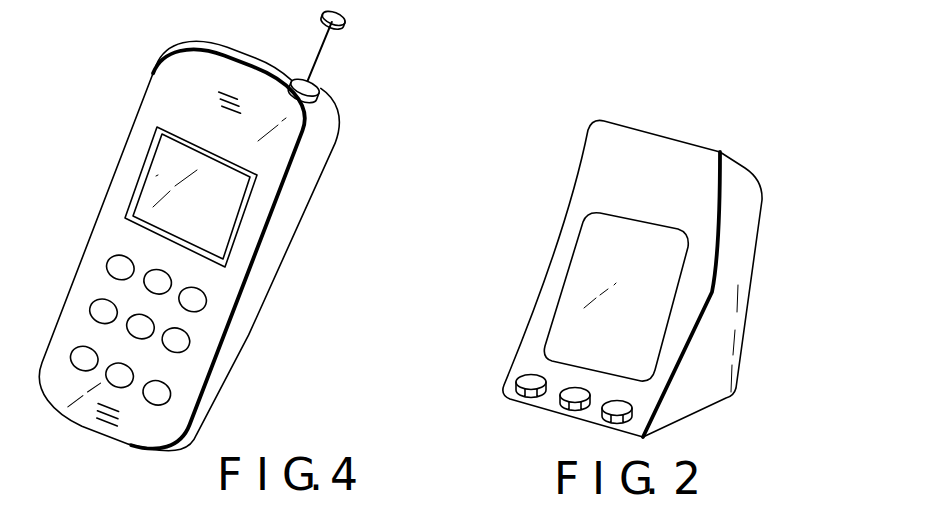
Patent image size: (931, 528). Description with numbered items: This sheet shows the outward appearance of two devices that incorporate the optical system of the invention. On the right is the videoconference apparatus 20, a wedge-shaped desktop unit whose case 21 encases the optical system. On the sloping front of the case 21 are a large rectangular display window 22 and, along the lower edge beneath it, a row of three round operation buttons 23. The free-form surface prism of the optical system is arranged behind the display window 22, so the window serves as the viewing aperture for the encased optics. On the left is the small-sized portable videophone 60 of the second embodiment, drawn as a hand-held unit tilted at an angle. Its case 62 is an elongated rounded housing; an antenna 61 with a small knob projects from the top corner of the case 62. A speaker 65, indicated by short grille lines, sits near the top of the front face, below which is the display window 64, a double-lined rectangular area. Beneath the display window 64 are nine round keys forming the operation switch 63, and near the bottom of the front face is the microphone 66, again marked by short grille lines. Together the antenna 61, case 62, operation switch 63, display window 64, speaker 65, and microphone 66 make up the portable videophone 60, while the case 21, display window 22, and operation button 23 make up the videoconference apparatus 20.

In FIG. 4, the small-sized portable videophone 60 is at (424, 64).
In FIG. 4, the antenna 61 is at (324, 45).
In FIG. 4, the case 62 is at (308, 155).
In FIG. 4, the operation switch 63 is at (206, 303).
In FIG. 4, the display window 64 is at (153, 185).
In FIG. 4, the speaker 65 is at (210, 92).
In FIG. 4, the microphone 66 is at (100, 408).
In FIG. 2, the videoconference apparatus 20 is at (774, 163).
In FIG. 2, the case 21 is at (752, 232).
In FIG. 2, the display window 22 is at (670, 298).
In FIG. 2, the operation button 23 is at (519, 378).